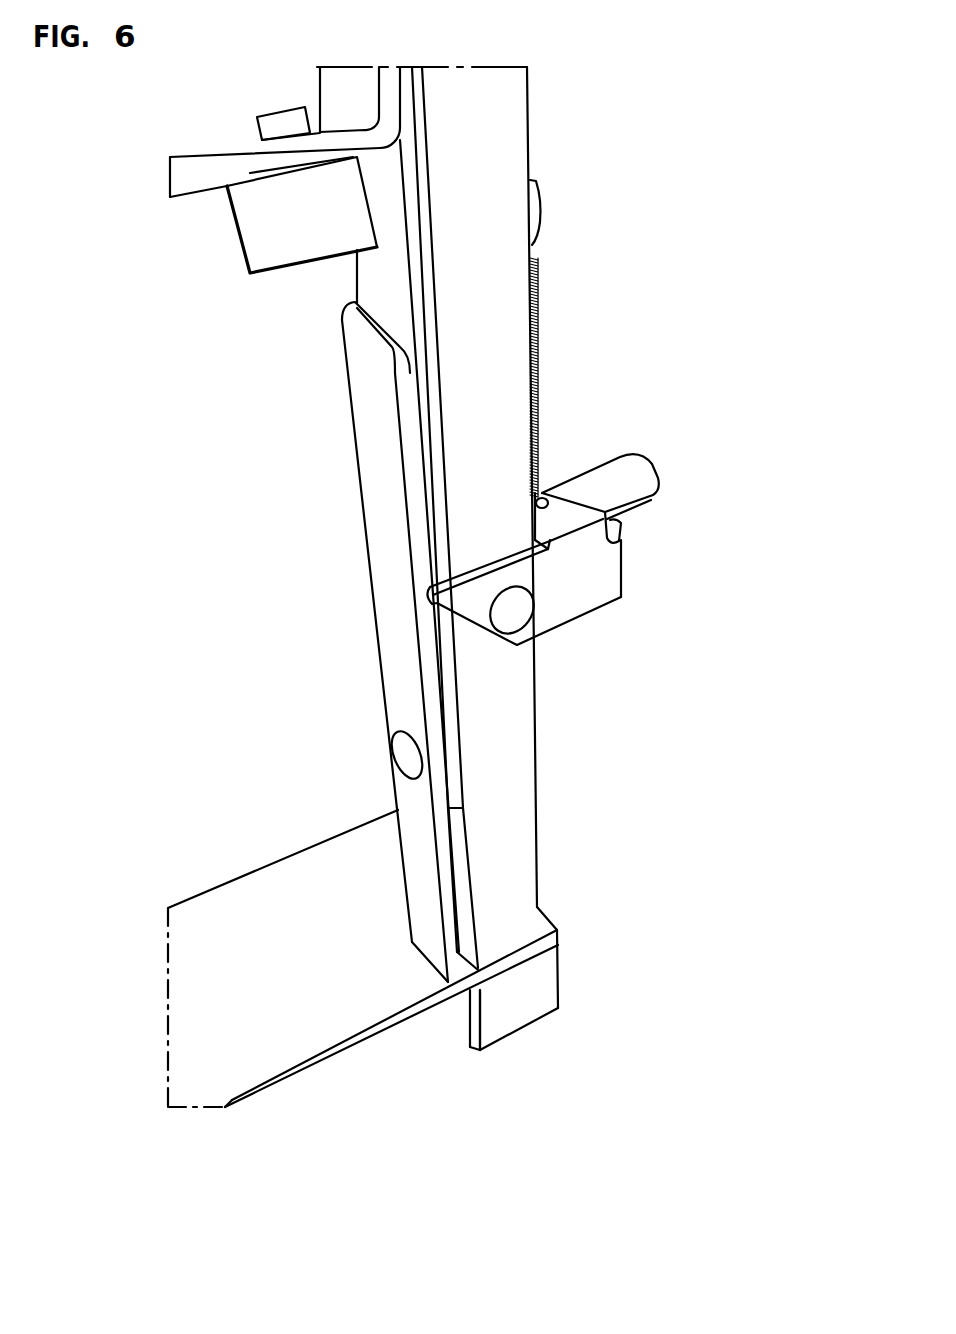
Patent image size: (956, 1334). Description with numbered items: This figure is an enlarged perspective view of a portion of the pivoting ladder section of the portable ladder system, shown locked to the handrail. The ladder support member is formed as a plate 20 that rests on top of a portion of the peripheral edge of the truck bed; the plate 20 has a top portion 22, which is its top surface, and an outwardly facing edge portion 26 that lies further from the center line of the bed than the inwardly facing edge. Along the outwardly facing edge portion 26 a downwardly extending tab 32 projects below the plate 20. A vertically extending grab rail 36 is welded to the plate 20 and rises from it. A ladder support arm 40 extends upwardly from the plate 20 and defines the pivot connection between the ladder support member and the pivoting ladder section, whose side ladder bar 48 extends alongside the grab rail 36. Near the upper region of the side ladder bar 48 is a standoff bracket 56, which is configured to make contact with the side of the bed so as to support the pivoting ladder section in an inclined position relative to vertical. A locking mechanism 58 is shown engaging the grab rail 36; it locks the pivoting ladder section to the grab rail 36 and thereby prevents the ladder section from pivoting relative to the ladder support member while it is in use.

The plate 20 is at (439, 610).
The top portion 22 is at (277, 902).
The outwardly facing edge portion 26 is at (365, 1043).
The downwardly extending tab 32 is at (535, 997).
The grab rail 36 is at (508, 232).
The ladder support arm 40 is at (367, 421).
The side ladder bar 48 is at (390, 244).
The standoff bracket 56 is at (238, 160).
The locking mechanism 58 is at (655, 440).